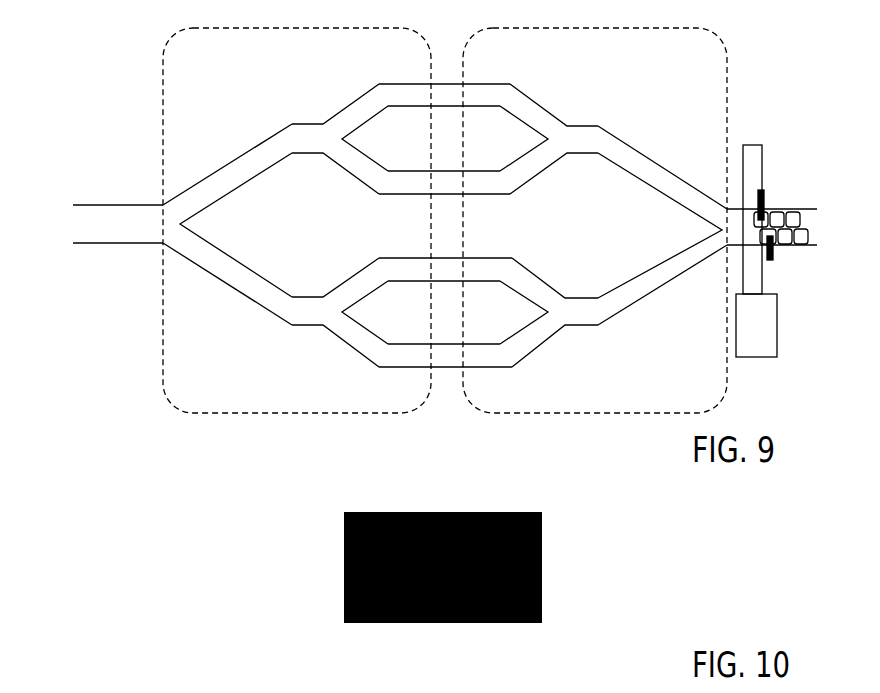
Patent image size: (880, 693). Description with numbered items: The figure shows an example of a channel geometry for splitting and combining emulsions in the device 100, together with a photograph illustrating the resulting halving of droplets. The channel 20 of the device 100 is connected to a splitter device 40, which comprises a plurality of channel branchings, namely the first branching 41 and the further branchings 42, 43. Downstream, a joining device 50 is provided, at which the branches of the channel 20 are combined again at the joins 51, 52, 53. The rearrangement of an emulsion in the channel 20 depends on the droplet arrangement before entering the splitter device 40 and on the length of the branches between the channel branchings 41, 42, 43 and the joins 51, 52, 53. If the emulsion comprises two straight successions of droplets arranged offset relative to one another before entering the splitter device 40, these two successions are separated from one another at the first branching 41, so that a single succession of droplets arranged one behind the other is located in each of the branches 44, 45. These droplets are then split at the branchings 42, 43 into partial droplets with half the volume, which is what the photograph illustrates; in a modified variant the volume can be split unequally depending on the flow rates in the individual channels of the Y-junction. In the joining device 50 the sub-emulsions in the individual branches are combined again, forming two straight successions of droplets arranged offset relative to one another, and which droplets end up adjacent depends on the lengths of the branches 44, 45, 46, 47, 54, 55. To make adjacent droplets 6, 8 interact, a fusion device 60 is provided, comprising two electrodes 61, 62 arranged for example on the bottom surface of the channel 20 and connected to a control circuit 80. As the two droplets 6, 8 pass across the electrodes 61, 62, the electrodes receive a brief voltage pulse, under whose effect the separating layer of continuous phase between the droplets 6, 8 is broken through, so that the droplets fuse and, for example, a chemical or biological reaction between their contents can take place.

The device 100 is at (86, 148).
The splitter device 40 is at (254, 73).
The joining device 50 is at (658, 68).
The channel 20 is at (130, 229).
The first branching 41 is at (167, 226).
The branch 44 is at (245, 282).
The branch 45 is at (248, 170).
The channel branching 42 is at (332, 133).
The channel branching 43 is at (320, 317).
The branch 46 is at (443, 95).
The branch 47 is at (390, 183).
The join 51 is at (563, 142).
The join 52 is at (563, 311).
The join 53 is at (705, 228).
The branch 54 is at (647, 175).
The branch 55 is at (652, 285).
The droplet 6 is at (755, 218).
The fusion device 60 is at (786, 236).
The electrode 61 is at (762, 198).
The electrode 62 is at (770, 262).
The droplet 8 is at (772, 240).
The control circuit 80 is at (762, 352).